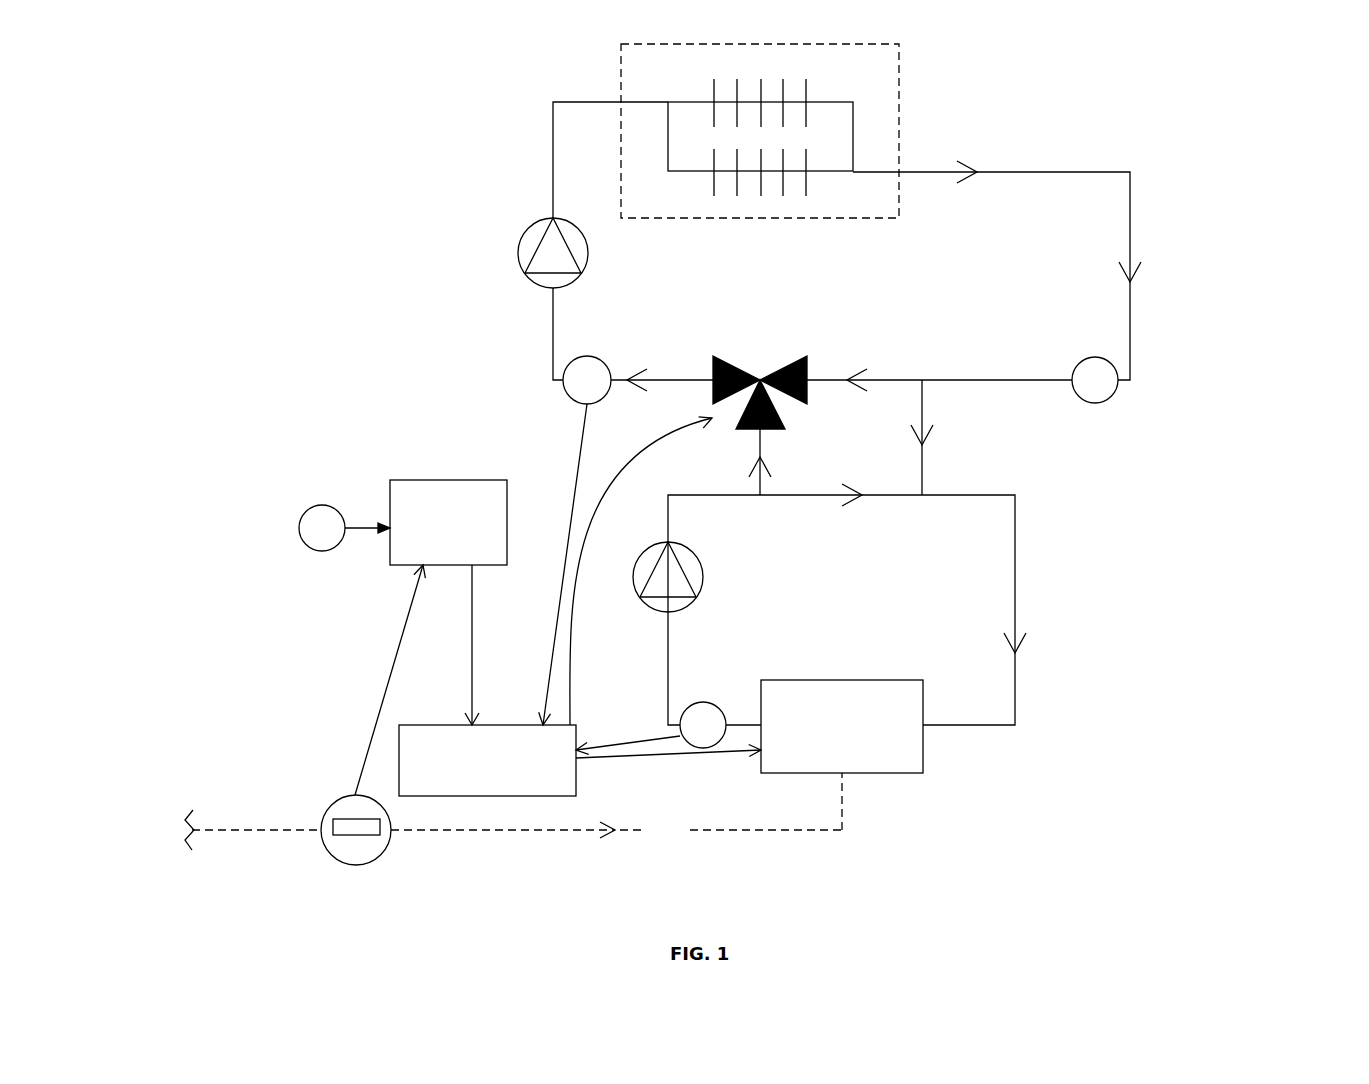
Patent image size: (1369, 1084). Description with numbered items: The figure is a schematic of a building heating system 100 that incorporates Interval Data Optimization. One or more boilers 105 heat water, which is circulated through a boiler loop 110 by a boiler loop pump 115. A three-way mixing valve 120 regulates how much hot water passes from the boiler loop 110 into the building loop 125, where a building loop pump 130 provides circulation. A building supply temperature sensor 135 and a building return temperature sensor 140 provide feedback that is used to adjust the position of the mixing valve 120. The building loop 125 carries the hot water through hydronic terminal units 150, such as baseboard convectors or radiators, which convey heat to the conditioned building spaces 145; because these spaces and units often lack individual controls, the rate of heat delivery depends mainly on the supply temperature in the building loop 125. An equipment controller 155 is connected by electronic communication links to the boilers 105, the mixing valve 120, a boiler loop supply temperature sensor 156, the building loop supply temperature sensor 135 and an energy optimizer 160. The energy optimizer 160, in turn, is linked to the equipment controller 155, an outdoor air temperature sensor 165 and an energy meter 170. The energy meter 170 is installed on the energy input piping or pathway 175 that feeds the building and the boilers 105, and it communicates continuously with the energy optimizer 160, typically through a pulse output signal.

The building heating system 100 is at (272, 202).
The boilers 105 is at (817, 736).
The boiler loop 110 is at (1015, 565).
The boiler loop pump 115 is at (747, 588).
The 3-way mixing valve 120 is at (679, 345).
The building loop 125 is at (1130, 237).
The building loop pump 130 is at (634, 263).
The building supply temperature sensor 135 is at (302, 345).
The building return temperature sensor 140 is at (1108, 397).
The conditioned building spaces 145 is at (899, 69).
The hydronic terminal units 150 is at (812, 113).
The equipment controller 155 is at (446, 760).
The boiler loop supply temperature sensor 156 is at (751, 635).
The energy optimizer 160 is at (432, 506).
The outdoor air temperature sensor 165 is at (159, 528).
The energy meter 170 is at (301, 893).
The energy input piping or pathway 175 is at (684, 841).